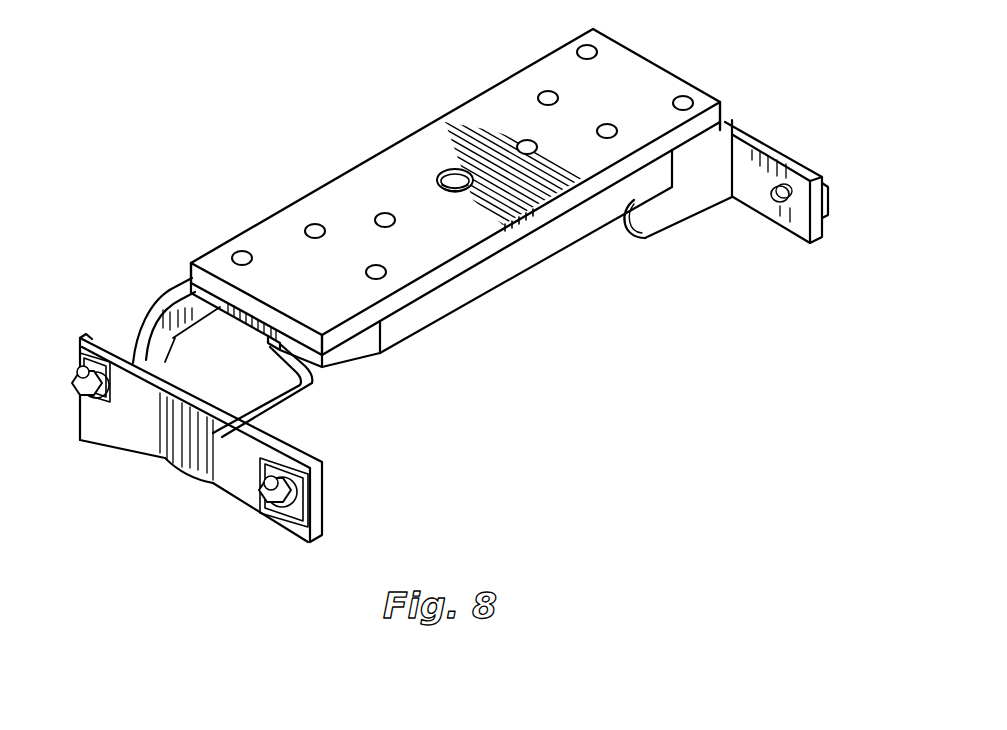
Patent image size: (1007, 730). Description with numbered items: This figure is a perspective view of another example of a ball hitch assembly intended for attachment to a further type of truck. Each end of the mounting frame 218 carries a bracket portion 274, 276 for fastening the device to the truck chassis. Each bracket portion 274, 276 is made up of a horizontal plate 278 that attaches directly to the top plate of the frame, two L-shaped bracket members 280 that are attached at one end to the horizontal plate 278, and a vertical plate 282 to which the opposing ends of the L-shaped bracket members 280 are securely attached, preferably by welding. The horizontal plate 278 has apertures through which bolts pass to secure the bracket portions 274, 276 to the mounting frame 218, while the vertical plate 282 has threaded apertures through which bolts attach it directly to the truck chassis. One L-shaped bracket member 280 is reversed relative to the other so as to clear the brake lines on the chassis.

The mounting frame 218 is at (390, 145).
The bracket portion 274 is at (145, 312).
The bracket portion 276 is at (760, 132).
The horizontal plate 278 is at (724, 122).
The L-shaped bracket member 280 is at (703, 190).
The vertical plate 282 is at (800, 167).